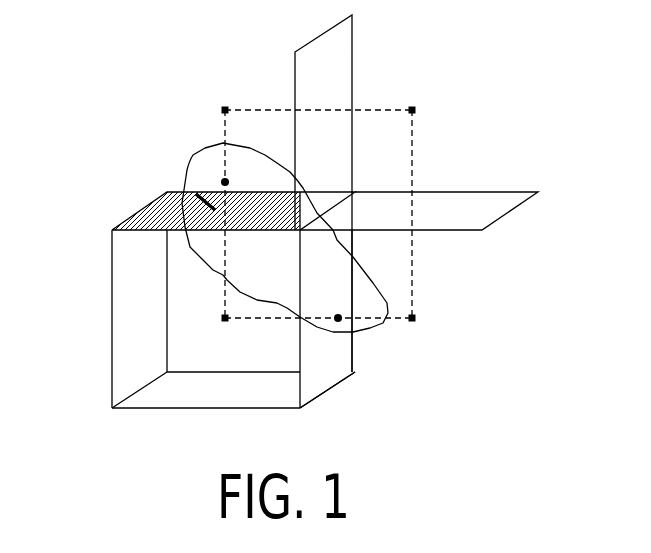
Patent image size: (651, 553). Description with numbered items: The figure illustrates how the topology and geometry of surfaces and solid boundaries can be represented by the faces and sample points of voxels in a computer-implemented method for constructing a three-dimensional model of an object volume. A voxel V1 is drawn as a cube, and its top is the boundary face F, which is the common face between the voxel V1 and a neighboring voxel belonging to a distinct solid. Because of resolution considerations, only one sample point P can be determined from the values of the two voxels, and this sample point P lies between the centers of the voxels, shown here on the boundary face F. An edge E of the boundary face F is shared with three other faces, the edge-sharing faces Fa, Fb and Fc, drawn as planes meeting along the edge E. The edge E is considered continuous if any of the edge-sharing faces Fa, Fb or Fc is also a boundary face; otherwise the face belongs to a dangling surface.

The voxel V1 is at (68, 332).
The sample point P is at (216, 177).
The boundary face F is at (185, 192).
The edge E is at (333, 219).
The edge-sharing face Fa is at (333, 75).
The edge-sharing face Fb is at (477, 202).
The edge-sharing face Fc is at (332, 358).